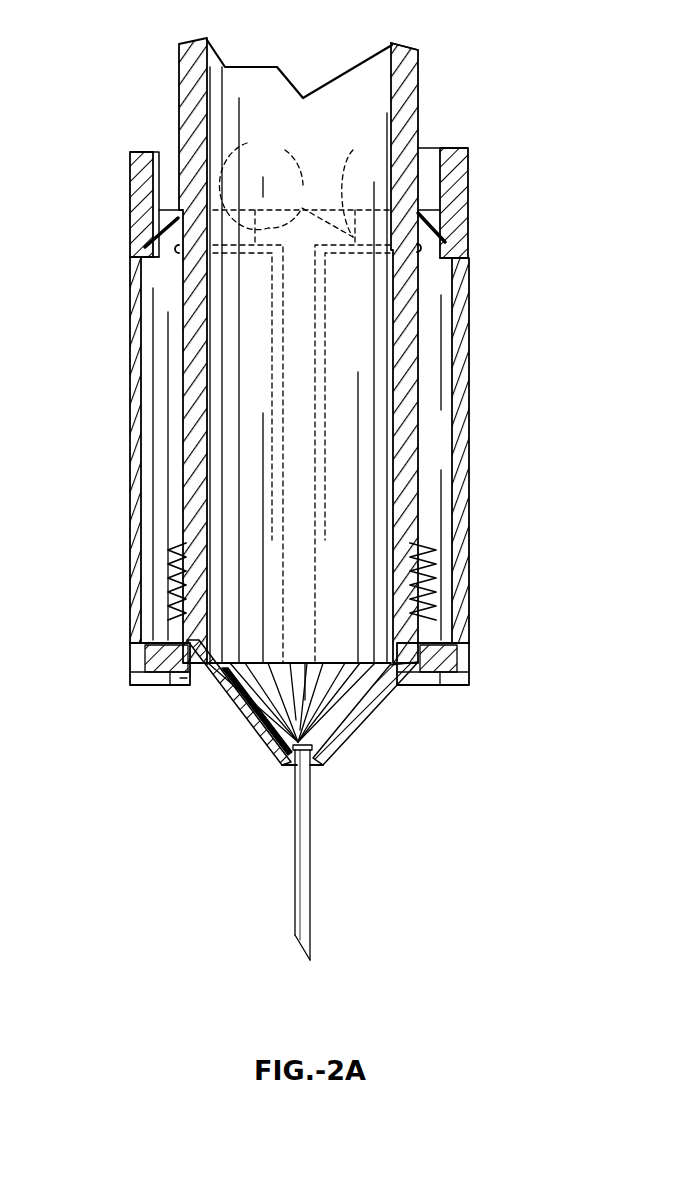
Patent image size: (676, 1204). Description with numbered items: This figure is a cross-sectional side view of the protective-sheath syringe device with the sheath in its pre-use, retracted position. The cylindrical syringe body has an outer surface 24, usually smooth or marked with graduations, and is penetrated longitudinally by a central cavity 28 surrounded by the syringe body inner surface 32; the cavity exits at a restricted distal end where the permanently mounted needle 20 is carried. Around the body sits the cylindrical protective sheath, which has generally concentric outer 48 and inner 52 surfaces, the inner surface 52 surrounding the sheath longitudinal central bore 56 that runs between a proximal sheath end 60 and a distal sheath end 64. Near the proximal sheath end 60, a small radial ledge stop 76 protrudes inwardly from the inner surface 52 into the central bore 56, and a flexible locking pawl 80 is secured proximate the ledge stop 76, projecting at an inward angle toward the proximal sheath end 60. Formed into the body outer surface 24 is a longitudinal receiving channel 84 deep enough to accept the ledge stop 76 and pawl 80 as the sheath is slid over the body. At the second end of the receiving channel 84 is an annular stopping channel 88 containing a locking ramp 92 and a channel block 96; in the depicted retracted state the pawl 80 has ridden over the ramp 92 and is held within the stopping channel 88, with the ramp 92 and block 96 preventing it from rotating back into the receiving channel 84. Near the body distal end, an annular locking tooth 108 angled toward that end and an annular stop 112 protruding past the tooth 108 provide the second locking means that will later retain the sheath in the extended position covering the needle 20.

The needle 20 is at (313, 843).
The outer surface 24 is at (418, 432).
The central cavity 28 is at (268, 93).
The syringe body inner surface 32 is at (388, 80).
The outer surface 48 is at (468, 580).
The inner surface 52 is at (465, 337).
The sheath longitudinal central bore 56 is at (430, 450).
The proximal sheath end 60 is at (158, 150).
The distal sheath end 64 is at (185, 688).
The ledge stop 76 is at (131, 256).
The flexible locking pawl 80 is at (150, 220).
The longitudinal receiving channel 84 is at (300, 360).
The annular stopping channel 88 is at (250, 148).
The locking ramp 92 is at (357, 182).
The channel block 96 is at (303, 207).
The locking tooth 108 is at (183, 543).
The annular stop 112 is at (153, 685).